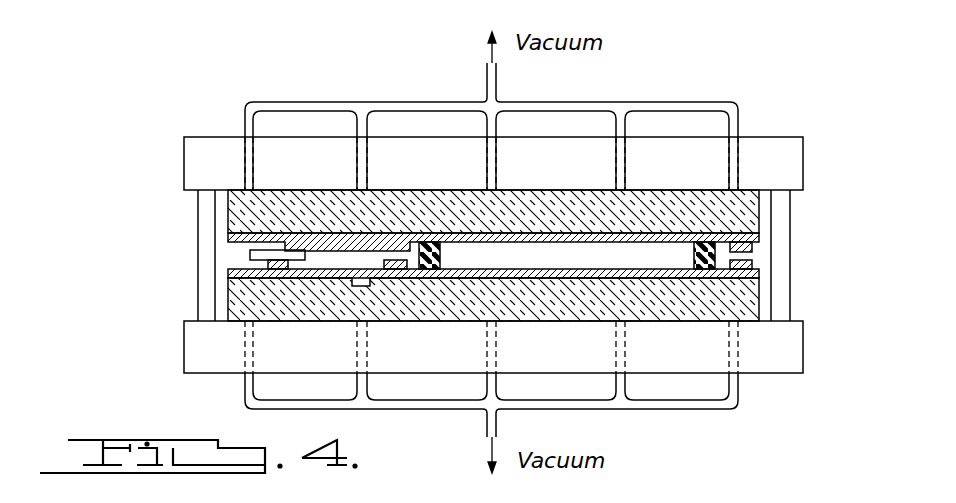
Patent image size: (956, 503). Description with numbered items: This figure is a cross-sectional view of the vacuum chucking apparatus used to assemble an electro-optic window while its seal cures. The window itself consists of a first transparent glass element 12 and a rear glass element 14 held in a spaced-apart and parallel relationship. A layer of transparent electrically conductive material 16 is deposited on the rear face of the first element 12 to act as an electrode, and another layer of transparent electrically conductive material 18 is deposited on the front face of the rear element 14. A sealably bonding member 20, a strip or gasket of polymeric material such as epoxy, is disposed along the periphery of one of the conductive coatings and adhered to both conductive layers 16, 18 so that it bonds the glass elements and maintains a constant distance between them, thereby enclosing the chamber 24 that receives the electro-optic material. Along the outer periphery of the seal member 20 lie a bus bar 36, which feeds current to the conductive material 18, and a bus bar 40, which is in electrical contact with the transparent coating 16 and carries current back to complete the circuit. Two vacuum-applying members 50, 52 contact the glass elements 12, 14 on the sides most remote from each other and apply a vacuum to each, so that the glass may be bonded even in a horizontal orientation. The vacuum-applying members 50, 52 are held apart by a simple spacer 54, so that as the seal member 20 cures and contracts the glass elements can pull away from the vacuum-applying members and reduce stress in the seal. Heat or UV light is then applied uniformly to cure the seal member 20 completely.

The first transparent element 12 is at (747, 197).
The rear element 14 is at (752, 315).
The transparent electrically conductive material 16 is at (761, 239).
The transparent electrically conductive material 18 is at (760, 272).
The sealably bonding member 20 is at (438, 268).
The chamber 24 is at (578, 262).
The bus bar 36 is at (753, 265).
The bus bar 40 is at (753, 248).
The vacuum-applying member 50 is at (198, 345).
The vacuum-applying member 52 is at (196, 160).
The spacer 54 is at (206, 248).